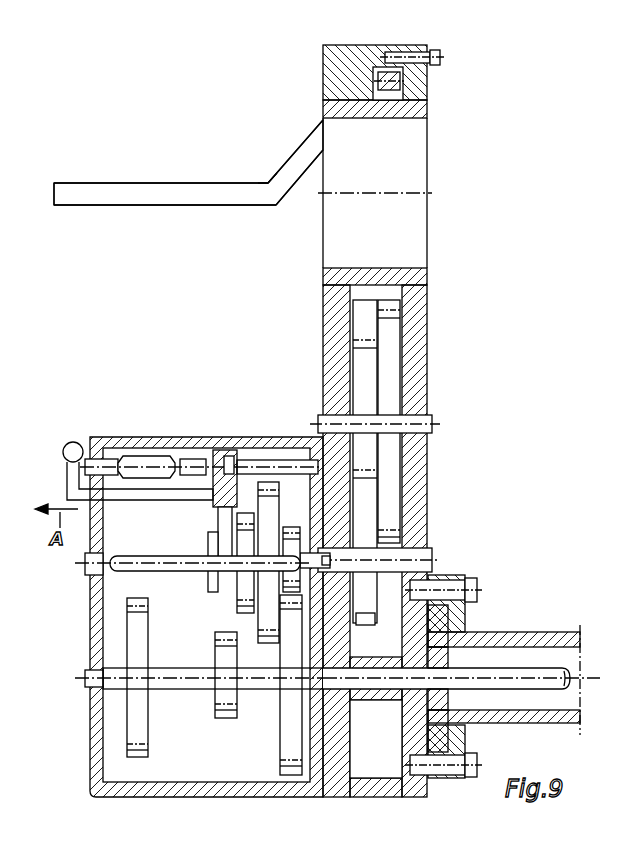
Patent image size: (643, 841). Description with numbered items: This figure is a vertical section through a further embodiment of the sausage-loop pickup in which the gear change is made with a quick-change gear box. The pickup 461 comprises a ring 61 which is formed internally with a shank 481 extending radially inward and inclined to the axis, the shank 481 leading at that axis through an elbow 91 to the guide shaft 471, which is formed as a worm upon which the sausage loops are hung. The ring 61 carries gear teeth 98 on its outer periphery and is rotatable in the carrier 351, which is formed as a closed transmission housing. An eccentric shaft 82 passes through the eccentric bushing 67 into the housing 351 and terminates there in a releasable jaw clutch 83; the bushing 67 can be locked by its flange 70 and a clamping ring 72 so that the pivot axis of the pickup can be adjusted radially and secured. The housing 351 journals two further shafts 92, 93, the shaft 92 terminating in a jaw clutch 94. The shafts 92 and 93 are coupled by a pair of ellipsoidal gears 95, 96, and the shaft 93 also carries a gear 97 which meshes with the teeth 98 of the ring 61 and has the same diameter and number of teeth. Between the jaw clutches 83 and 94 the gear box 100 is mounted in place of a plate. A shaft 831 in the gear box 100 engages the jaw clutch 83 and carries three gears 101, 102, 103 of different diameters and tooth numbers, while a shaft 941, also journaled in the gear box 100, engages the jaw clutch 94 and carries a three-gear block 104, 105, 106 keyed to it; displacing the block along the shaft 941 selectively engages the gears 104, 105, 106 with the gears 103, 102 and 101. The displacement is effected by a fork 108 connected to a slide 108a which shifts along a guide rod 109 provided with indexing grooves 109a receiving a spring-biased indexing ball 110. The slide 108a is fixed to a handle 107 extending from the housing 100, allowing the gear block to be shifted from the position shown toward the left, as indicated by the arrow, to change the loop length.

The ring 61 is at (390, 112).
The eccentric bushing 67 is at (520, 632).
The flange 70 is at (466, 735).
The clamping ring 72 is at (466, 618).
The eccentric shaft 82 is at (571, 676).
The jaw clutch 83 is at (350, 705).
The elbow 91 is at (270, 180).
The shaft 92 is at (432, 560).
The shaft 93 is at (430, 424).
The jaw clutch 94 is at (327, 553).
The ellipsoidal gear 95 is at (370, 627).
The ellipsoidal gear 96 is at (362, 385).
The gear 97 is at (397, 350).
The gear teeth 98 is at (410, 82).
The gear box 100 is at (96, 755).
The gear 101 is at (145, 738).
The gear 102 is at (226, 718).
The gear 103 is at (280, 768).
The gear of three-gear block 104 is at (238, 592).
The gear of three-gear block 105 is at (262, 640).
The gear of three-gear block 106 is at (290, 530).
The handle 107 is at (68, 470).
The fork 108 is at (218, 526).
The slide 108a is at (226, 450).
The guide rod 109 is at (162, 455).
The indexing grooves 109a is at (120, 455).
The indexing ball 110 is at (232, 456).
The carrier 351 is at (310, 392).
The pickup 461 is at (233, 139).
The guide shaft 471 is at (186, 183).
The shank 481 is at (300, 145).
The shaft 831 is at (178, 688).
The shaft 941 is at (143, 556).